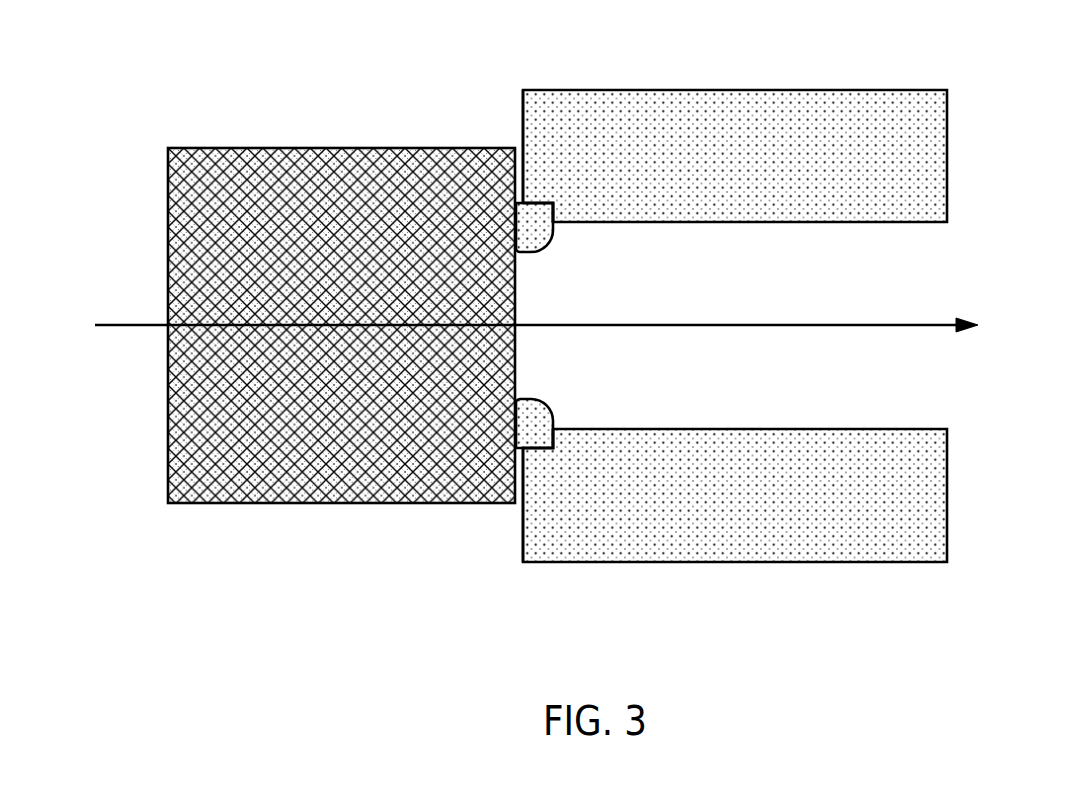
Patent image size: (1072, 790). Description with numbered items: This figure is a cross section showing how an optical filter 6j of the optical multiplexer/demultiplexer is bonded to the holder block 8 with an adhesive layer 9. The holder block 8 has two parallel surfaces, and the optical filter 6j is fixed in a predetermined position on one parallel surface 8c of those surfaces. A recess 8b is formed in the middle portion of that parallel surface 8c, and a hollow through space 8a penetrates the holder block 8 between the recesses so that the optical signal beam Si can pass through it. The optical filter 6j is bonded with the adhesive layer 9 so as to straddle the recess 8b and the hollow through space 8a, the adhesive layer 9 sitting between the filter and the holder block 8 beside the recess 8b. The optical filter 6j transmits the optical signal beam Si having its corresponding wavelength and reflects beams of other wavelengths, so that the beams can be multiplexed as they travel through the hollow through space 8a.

The optical filter 6j is at (342, 148).
The holder block 8 is at (815, 88).
The hollow through space 8a is at (903, 280).
The recess 8b is at (553, 203).
The parallel surface 8c is at (522, 125).
The adhesive layer 9 is at (553, 242).
The optical signal beam Si is at (720, 326).